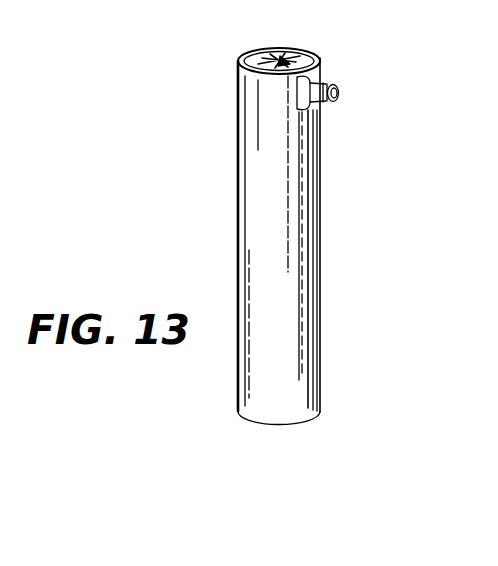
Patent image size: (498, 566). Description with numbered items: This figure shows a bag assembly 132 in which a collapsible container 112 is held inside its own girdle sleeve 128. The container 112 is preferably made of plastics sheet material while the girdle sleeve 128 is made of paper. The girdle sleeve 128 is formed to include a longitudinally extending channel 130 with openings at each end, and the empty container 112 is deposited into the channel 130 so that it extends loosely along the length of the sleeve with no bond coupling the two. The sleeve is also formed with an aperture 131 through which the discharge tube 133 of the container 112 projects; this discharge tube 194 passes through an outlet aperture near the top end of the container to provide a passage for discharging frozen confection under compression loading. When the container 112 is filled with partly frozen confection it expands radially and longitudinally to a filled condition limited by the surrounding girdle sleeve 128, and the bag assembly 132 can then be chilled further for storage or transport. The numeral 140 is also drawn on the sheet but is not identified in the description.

The girdle sleeve 128 is at (290, 305).
The channel 130 is at (262, 50).
The collapsible container 112 is at (293, 50).
The aperture 131 is at (297, 103).
The discharge tube 133 is at (337, 84).
The bag assembly 132 is at (364, 119).
The discharge tube 194 is at (334, 117).
The reference to adjacent component 140 is at (471, 19).